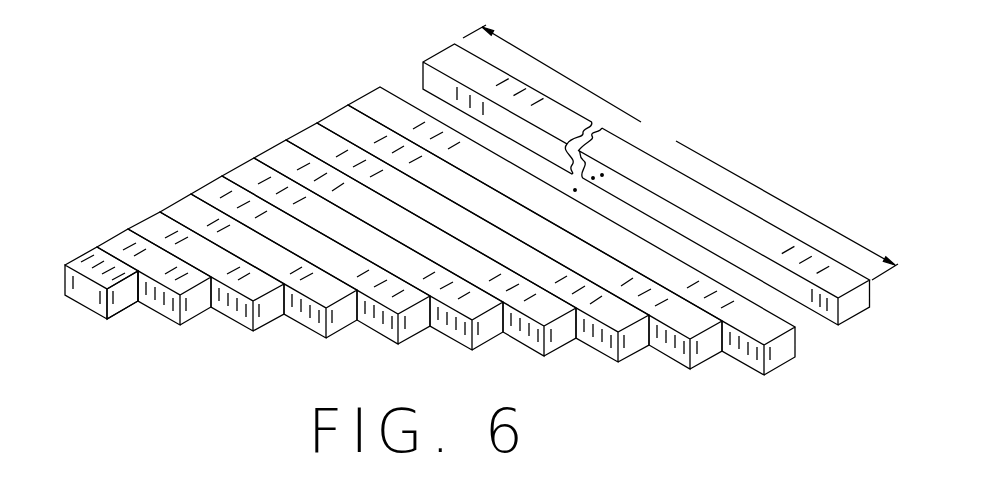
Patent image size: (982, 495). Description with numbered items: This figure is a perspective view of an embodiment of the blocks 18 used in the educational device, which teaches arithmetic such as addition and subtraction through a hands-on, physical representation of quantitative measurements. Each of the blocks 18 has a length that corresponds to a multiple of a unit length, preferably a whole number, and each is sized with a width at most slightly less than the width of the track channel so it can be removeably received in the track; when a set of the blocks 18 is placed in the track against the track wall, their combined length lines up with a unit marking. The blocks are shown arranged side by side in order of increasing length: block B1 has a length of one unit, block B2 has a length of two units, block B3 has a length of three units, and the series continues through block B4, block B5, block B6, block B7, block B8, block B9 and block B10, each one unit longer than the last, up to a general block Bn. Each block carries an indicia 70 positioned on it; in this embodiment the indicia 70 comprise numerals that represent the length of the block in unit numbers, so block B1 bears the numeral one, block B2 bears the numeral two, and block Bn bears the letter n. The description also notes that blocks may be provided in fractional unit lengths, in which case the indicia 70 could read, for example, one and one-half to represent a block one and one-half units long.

The blocks 18 is at (428, 231).
The indicia 70 is at (124, 293).
The block B1 is at (100, 303).
The block B2 is at (151, 271).
The block B3 is at (202, 265).
The block B4 is at (255, 259).
The block B5 is at (308, 253).
The block B6 is at (359, 249).
The block B7 is at (410, 243).
The block B8 is at (463, 237).
The block B9 is at (515, 231).
The block B10 is at (566, 224).
The block Bn is at (654, 175).